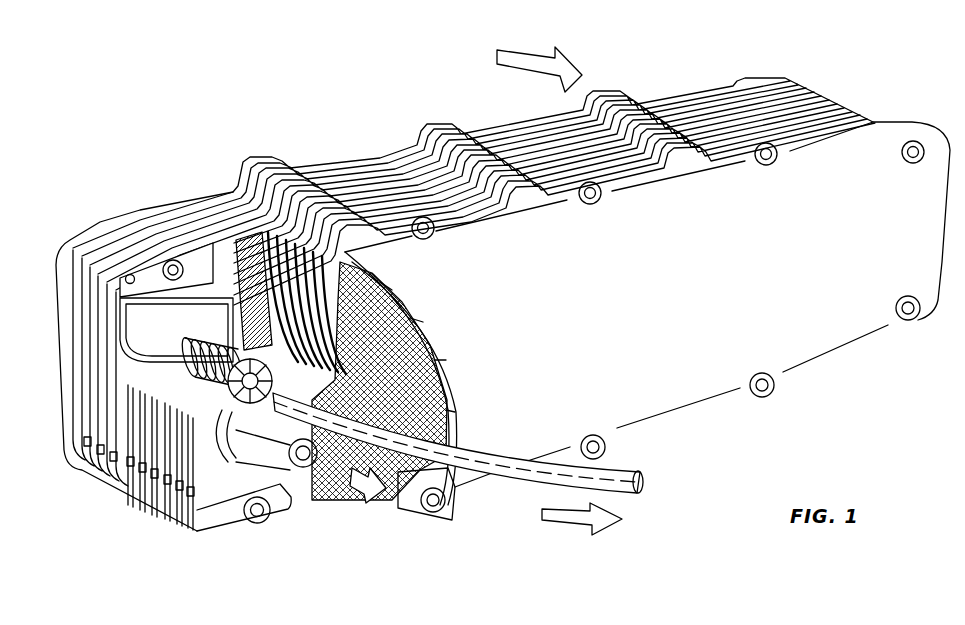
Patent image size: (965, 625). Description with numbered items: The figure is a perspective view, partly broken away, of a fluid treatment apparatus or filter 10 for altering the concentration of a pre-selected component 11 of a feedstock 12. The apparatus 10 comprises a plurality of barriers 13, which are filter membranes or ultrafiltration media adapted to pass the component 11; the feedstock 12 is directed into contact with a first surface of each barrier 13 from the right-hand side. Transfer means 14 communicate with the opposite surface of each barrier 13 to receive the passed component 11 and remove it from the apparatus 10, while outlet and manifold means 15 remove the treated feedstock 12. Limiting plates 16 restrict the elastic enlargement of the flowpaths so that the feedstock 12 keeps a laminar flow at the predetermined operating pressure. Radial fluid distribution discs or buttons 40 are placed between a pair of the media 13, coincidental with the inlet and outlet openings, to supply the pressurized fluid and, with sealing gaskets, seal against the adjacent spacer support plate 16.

The apparatus 10 is at (276, 553).
The pre-selected component 11 is at (360, 497).
The feedstock 12 is at (497, 60).
The barrier 13 is at (423, 382).
The transfer means 14 is at (160, 506).
The outlet and manifold means 15 is at (230, 212).
The plate 16 is at (328, 243).
The radial fluid distribution disc or button 40 is at (192, 367).